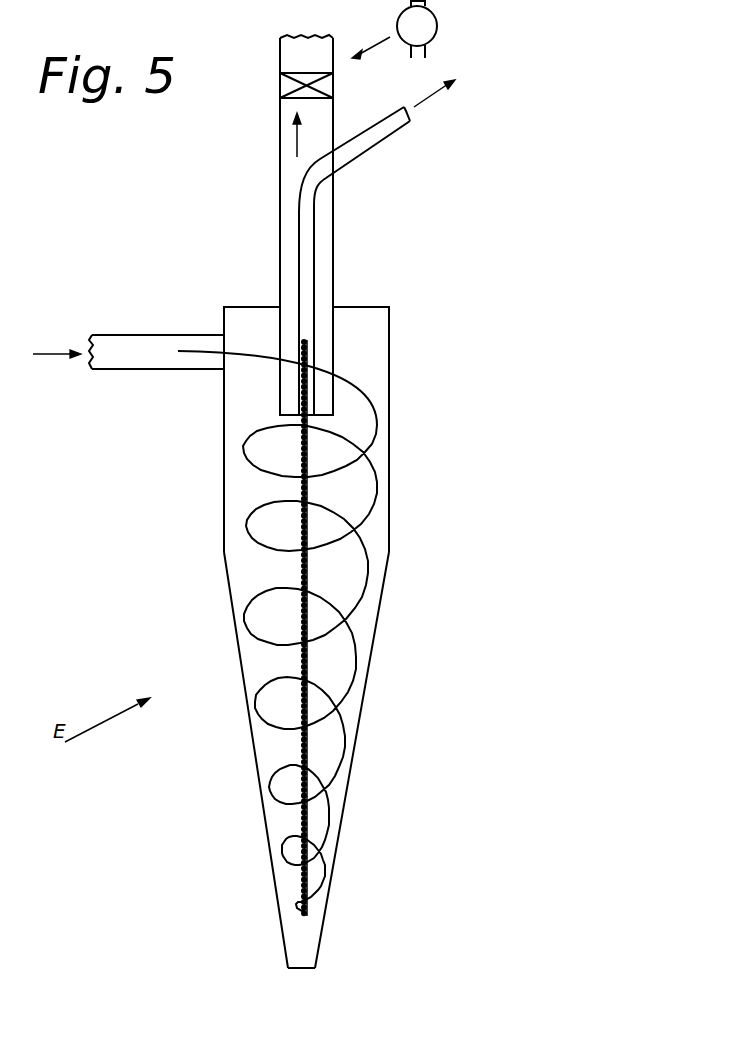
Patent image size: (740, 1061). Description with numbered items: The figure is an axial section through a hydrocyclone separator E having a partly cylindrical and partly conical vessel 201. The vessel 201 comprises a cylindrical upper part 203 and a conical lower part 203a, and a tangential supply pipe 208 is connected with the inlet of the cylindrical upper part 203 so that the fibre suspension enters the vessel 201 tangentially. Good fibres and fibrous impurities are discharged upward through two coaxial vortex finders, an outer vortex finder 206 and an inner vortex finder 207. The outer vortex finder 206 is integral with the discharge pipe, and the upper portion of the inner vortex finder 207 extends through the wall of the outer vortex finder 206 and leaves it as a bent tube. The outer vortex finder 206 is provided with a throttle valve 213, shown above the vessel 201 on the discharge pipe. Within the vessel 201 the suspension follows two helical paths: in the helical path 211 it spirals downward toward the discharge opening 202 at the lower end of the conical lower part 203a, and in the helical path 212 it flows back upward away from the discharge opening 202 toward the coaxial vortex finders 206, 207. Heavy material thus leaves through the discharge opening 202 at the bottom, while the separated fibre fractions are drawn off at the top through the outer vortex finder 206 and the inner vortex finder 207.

The vessel 201 is at (359, 723).
The discharge opening 202 is at (306, 970).
The cylindrical upper part 203 is at (389, 446).
The conical lower part 203a is at (338, 848).
The outer vortex finder 206 is at (334, 380).
The inner vortex finder 207 is at (376, 137).
The tangential supply pipe 208 is at (128, 369).
The helical path 211 is at (377, 503).
The helical path 212 is at (310, 578).
The throttle valve 213 is at (437, 27).